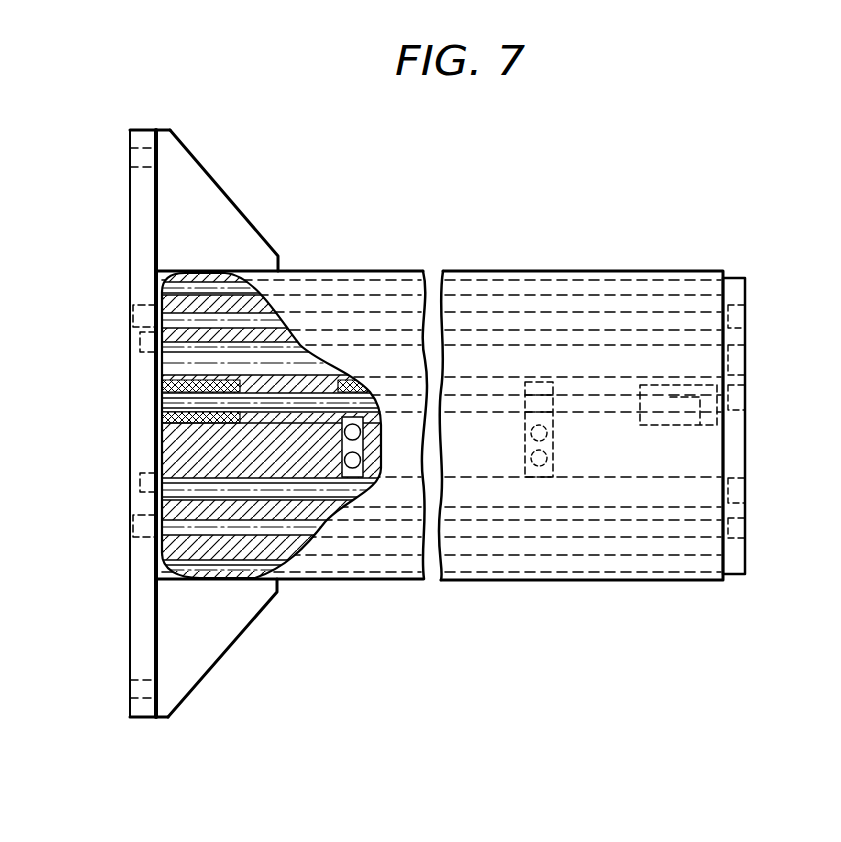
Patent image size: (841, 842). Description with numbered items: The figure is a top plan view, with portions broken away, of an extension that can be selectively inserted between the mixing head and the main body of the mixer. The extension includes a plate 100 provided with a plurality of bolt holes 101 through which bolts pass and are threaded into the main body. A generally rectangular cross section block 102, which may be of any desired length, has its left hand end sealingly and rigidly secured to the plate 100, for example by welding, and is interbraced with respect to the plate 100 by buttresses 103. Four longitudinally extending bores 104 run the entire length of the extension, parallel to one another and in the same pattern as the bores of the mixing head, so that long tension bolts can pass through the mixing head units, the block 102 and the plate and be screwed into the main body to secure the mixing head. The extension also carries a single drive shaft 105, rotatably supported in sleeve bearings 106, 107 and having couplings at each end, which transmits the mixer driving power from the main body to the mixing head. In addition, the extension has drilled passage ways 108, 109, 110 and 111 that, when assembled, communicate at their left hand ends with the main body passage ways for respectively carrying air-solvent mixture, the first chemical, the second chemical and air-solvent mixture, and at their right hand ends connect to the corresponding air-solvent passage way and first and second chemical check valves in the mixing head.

The plate 100 is at (150, 190).
The bolt holes 101 is at (146, 145).
The block 102 is at (572, 271).
The buttresses 103 is at (208, 198).
The longitudinally extending bores 104 is at (208, 290).
The drive shaft 105 is at (302, 400).
The sleeve bearing 106 is at (205, 403).
The sleeve bearing 107 is at (366, 392).
The drilled passage way 108 is at (265, 322).
The drilled passage way 109 is at (320, 352).
The drilled passage way 110 is at (310, 494).
The drilled passage way 111 is at (235, 533).